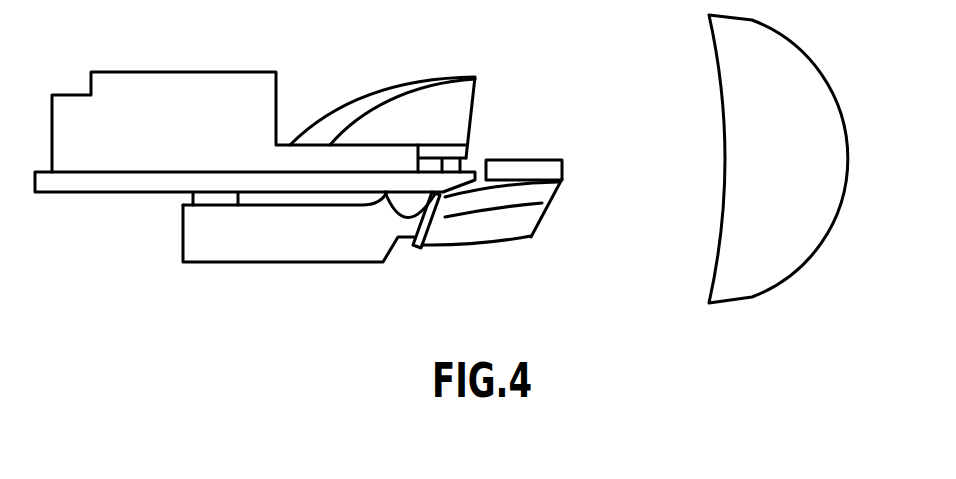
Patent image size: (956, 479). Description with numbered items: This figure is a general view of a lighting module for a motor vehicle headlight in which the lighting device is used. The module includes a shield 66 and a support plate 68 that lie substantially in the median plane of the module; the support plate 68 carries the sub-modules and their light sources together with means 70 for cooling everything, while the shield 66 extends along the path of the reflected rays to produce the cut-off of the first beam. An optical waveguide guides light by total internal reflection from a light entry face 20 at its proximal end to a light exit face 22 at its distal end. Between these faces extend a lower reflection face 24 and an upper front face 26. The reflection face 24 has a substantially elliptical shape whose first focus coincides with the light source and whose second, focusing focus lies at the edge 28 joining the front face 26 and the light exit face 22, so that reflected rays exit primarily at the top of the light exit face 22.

The means for cooling 70 is at (223, 90).
The support plate 68 is at (155, 182).
The light entry face 20 is at (393, 203).
The shield 66 is at (543, 165).
The front face 26 is at (500, 190).
The edge 28 is at (560, 177).
The light exit face 22 is at (552, 200).
The reflection face 24 is at (490, 222).